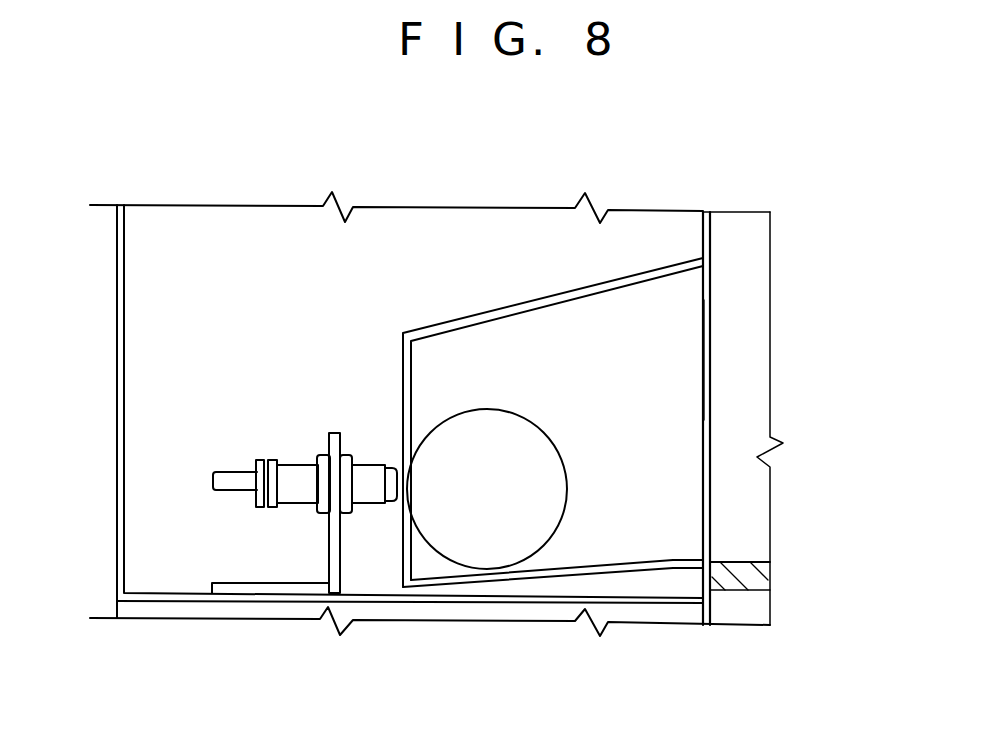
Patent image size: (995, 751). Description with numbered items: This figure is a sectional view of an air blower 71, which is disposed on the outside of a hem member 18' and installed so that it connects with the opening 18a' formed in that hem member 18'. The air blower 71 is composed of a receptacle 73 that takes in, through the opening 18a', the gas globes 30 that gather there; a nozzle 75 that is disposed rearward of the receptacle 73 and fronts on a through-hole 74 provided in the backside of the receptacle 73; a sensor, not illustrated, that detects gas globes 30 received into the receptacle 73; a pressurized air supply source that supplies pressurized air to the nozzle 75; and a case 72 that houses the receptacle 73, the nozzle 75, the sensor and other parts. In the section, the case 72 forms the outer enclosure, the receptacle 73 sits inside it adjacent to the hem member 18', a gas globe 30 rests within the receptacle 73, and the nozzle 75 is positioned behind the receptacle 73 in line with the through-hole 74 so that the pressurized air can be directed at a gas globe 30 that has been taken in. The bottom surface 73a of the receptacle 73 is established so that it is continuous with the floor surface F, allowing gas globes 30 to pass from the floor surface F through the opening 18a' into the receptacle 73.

The air blower 71 is at (230, 728).
The case 72 is at (118, 438).
The receptacle 73 is at (440, 327).
The bottom surface of the receptacle 73a is at (673, 562).
The through-hole 74 is at (400, 465).
The nozzle 75 is at (367, 505).
The gas globe 30 is at (567, 472).
The hem member 18' is at (774, 415).
The opening 18a' is at (784, 360).
The floor surface F is at (760, 556).